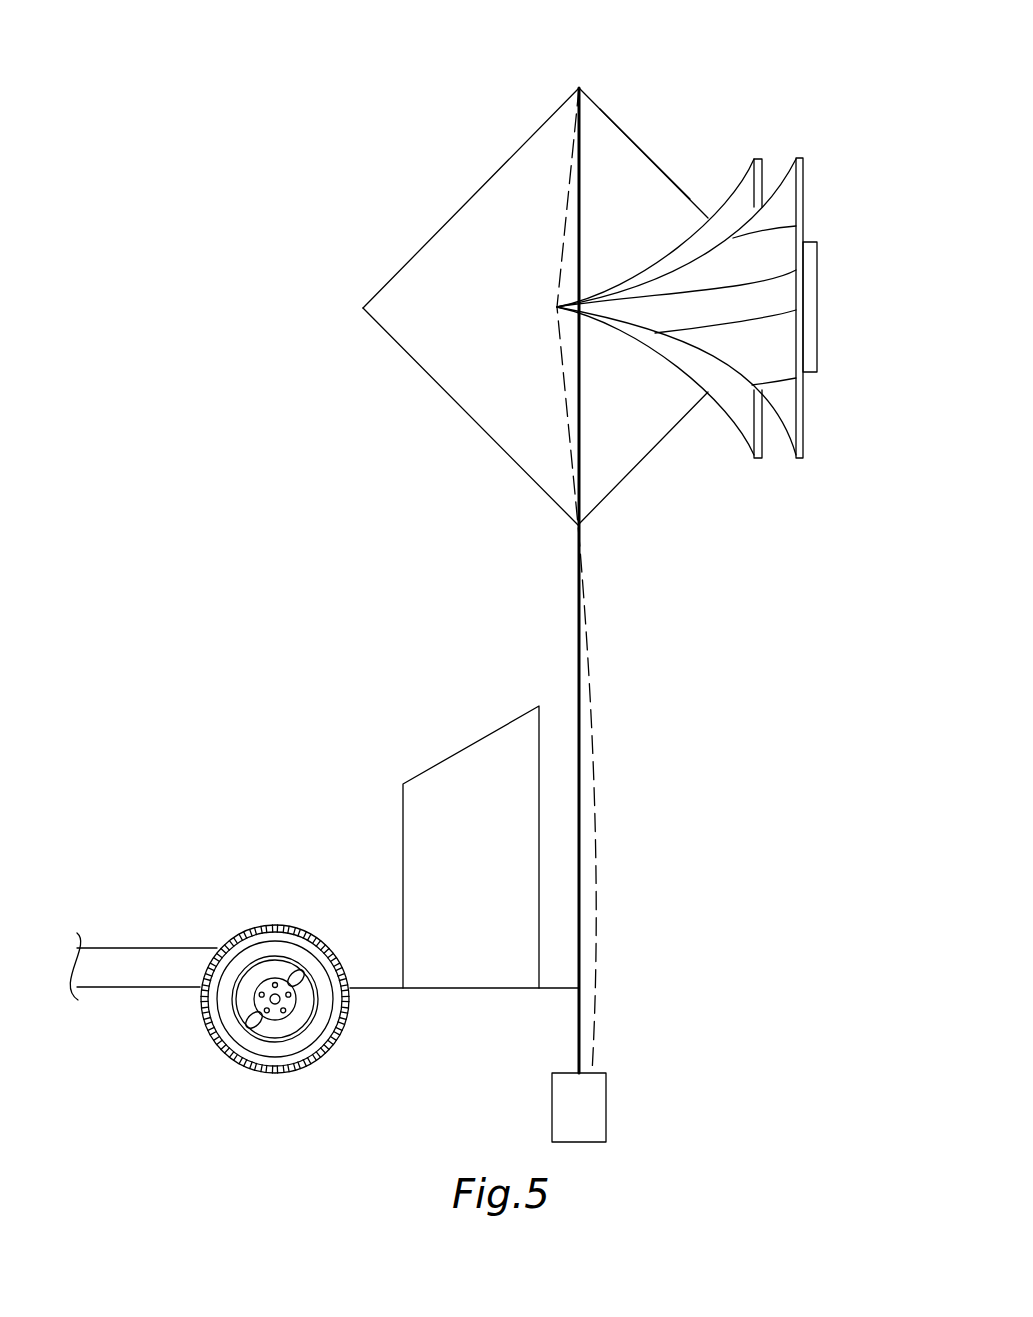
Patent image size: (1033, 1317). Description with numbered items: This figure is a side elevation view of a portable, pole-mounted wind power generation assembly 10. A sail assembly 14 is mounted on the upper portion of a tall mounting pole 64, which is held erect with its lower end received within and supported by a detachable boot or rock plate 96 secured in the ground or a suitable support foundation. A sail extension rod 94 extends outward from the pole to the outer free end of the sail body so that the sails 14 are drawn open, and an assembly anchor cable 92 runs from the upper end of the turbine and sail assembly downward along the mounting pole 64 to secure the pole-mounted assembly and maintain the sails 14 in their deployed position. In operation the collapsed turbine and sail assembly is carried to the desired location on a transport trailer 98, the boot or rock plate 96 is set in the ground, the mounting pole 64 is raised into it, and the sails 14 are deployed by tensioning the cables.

The wind power generation assembly 10 is at (663, 13).
The sail assembly 14 is at (473, 192).
The assembly anchor cable 92 is at (663, 172).
The mounting pole 64 is at (579, 652).
The sail extension rod 94 is at (598, 838).
The boot or rock plate 96 is at (606, 1077).
The transport trailer 98 is at (133, 987).